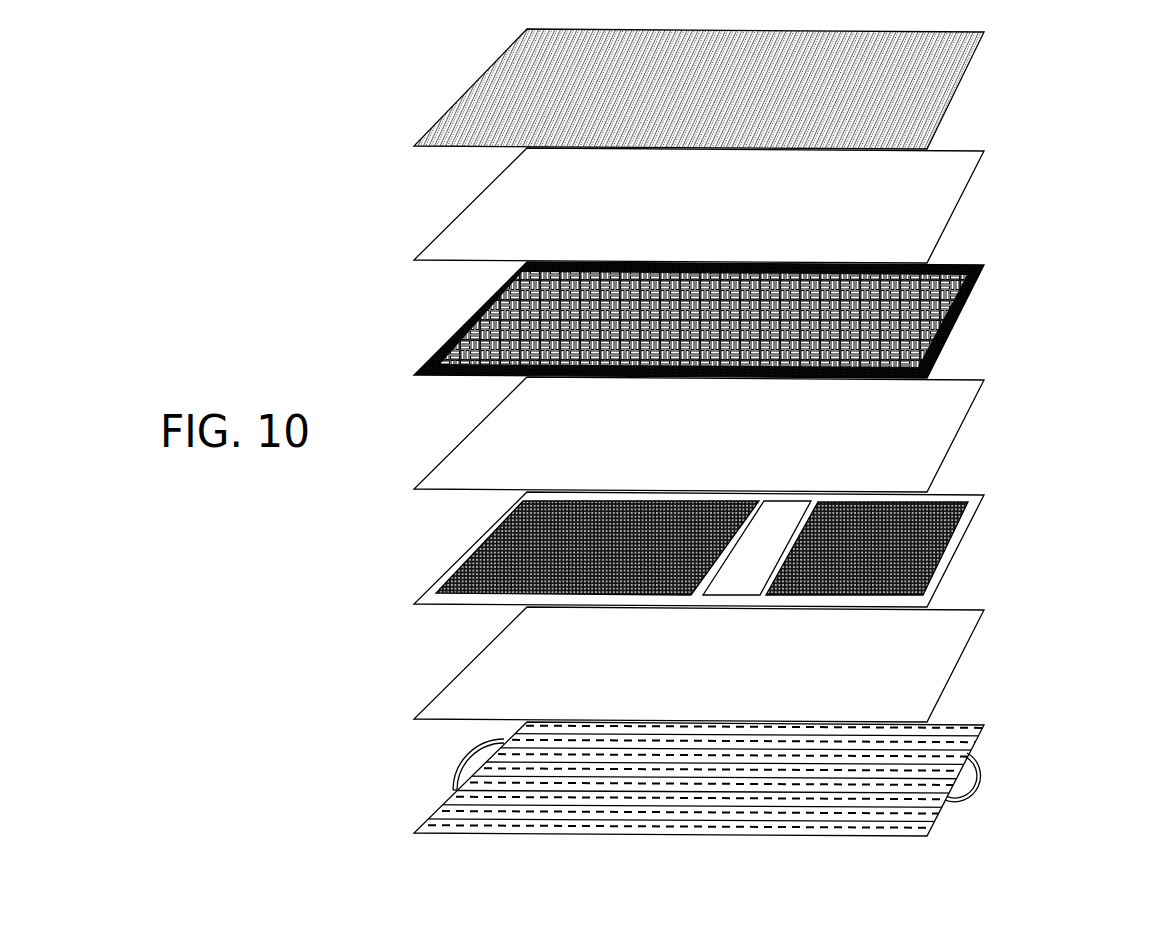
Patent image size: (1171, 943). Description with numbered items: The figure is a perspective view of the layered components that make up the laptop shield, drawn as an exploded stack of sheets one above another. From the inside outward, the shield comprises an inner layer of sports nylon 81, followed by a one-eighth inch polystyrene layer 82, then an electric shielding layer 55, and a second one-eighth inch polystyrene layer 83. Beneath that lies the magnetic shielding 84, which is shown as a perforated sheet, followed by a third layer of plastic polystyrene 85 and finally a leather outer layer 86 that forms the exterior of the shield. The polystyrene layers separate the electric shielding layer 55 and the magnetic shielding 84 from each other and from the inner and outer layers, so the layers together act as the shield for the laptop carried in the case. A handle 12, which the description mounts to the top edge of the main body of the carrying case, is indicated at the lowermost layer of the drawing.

The inner layer of sports nylon 81 is at (932, 92).
The polystyrene layer 82 is at (932, 200).
The electric shielding layer 55 is at (968, 303).
The second polystyrene layer 83 is at (928, 433).
The magnetic shielding 84 is at (930, 542).
The third layer of plastic polystyrene 85 is at (927, 657).
The leather outer layer 86 is at (927, 769).
The handle 12 is at (975, 782).